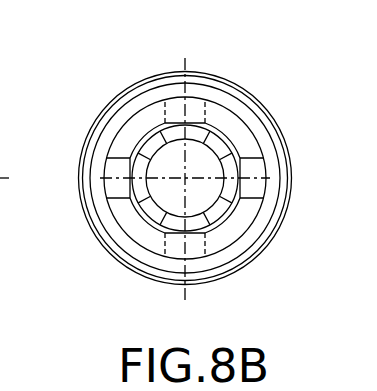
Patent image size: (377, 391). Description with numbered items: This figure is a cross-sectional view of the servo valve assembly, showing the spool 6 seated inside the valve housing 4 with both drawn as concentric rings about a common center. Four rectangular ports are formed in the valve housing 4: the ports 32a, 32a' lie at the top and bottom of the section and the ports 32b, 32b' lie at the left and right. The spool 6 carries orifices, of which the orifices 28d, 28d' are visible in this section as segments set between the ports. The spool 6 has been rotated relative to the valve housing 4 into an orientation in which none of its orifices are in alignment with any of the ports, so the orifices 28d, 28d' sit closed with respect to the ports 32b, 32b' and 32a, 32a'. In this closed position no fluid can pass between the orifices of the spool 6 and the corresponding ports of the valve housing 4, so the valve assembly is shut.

The valve housing 4 is at (258, 96).
The spool 6 is at (143, 222).
The orifice 28d is at (258, 239).
The orifice 28d' is at (102, 105).
The port 32a is at (224, 271).
The port 32a' is at (204, 73).
The port 32b is at (289, 197).
The port 32b' is at (69, 202).